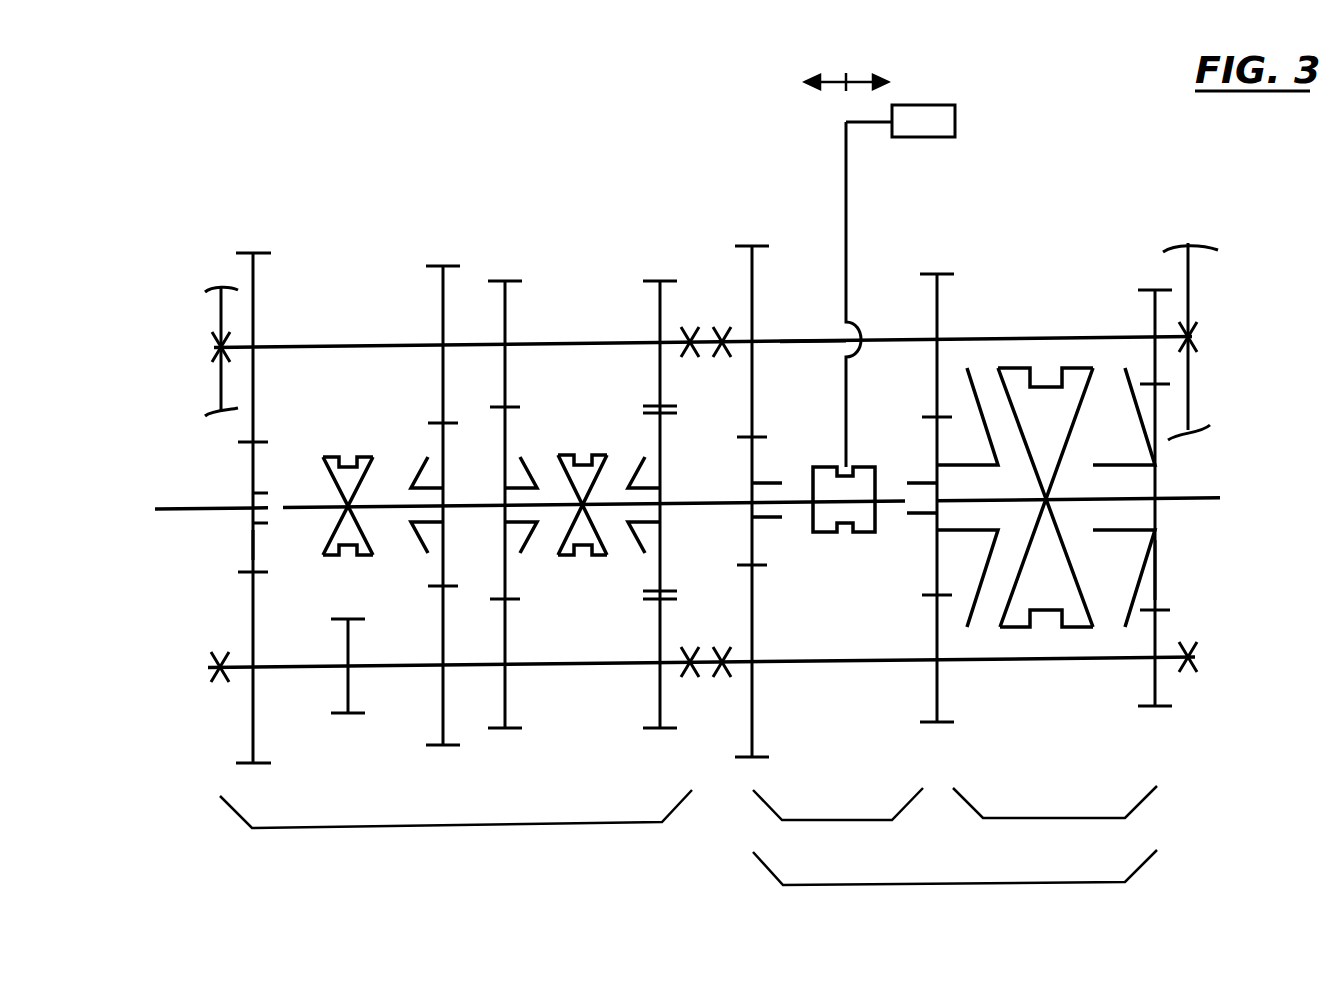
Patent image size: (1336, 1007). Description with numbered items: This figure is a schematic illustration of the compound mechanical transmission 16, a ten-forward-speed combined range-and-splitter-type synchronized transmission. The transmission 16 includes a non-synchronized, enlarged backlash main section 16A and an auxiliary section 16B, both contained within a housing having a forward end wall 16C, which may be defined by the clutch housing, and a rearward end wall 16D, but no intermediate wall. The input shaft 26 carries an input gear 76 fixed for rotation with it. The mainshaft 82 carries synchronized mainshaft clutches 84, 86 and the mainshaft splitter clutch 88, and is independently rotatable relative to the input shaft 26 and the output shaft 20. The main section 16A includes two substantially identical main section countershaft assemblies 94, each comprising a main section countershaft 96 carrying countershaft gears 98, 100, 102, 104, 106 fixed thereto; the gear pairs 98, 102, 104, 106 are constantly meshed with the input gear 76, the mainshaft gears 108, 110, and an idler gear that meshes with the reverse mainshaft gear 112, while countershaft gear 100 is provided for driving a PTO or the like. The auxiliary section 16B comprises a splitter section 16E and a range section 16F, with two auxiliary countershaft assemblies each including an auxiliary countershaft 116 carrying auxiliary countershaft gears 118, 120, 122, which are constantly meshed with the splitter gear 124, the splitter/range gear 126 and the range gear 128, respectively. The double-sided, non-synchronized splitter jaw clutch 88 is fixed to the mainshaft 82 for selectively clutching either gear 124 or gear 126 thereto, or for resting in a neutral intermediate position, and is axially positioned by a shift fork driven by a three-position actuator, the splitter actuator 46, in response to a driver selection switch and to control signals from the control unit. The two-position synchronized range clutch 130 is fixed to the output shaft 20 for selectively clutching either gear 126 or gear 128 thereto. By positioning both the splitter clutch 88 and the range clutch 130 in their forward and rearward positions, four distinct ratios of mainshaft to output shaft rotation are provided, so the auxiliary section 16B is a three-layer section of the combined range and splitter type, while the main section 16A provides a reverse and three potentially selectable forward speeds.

The transmission 16 is at (692, 186).
The main section 16A is at (456, 829).
The auxiliary section 16B is at (955, 888).
The forward end wall 16C is at (221, 316).
The rearward end wall 16D is at (1188, 370).
The splitter section 16E is at (838, 817).
The range section 16F is at (1055, 815).
The output shaft 20 is at (1220, 499).
The input shaft 26 is at (220, 507).
The splitter actuator 46 is at (940, 120).
The input gear 76 is at (250, 542).
The mainshaft 82 is at (738, 504).
The mainshaft clutch 84 is at (348, 447).
The mainshaft clutch 86 is at (583, 447).
The splitter clutch 88 is at (846, 547).
The main section countershaft assembly 94 is at (583, 678).
The main section countershaft 96 is at (588, 343).
The countershaft gear 98 is at (253, 317).
The countershaft gear 100 is at (348, 683).
The countershaft gear 102 is at (443, 313).
The countershaft gear 104 is at (505, 311).
The countershaft gear 106 is at (660, 310).
The mainshaft gear 108 is at (443, 438).
The mainshaft gear 110 is at (505, 440).
The reverse mainshaft gear 112 is at (660, 438).
The auxiliary countershaft 116 is at (815, 343).
The auxiliary countershaft gear 118 is at (752, 308).
The auxiliary countershaft gear 120 is at (938, 307).
The auxiliary countershaft gear 122 is at (1155, 320).
The splitter gear 124 is at (752, 468).
The splitter/range gear 126 is at (937, 442).
The range gear 128 is at (1157, 578).
The range clutch 130 is at (1047, 355).